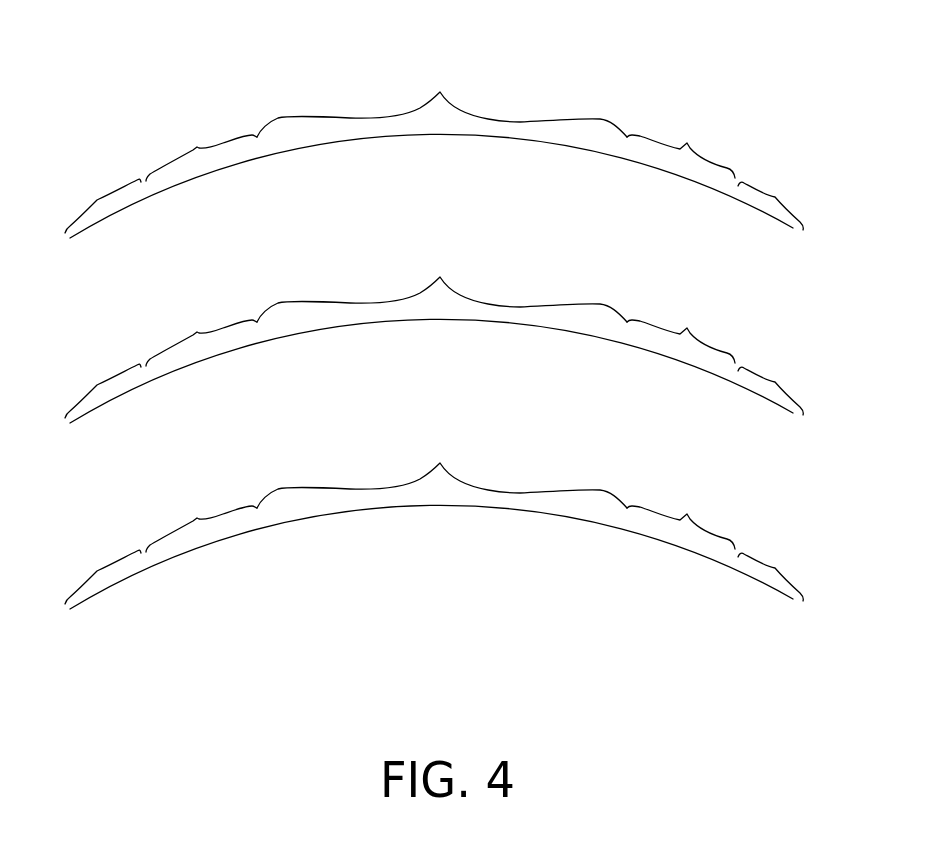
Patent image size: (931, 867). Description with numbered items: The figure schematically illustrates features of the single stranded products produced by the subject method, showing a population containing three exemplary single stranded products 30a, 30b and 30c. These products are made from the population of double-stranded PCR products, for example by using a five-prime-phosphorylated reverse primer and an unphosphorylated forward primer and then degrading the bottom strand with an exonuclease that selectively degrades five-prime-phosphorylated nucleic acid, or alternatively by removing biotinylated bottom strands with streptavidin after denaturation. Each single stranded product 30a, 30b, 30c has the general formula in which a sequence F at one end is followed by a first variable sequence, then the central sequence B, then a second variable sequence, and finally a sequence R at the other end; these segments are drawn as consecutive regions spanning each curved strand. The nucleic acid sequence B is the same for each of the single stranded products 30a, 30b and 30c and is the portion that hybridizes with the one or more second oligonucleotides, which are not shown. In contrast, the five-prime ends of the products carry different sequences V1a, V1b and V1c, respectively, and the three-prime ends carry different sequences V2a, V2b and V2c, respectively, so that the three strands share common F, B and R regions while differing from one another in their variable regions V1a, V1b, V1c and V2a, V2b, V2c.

The single stranded product 30a is at (183, 180).
The single stranded product 30b is at (431, 375).
The single stranded product 30c is at (431, 561).
The sequence F is at (97, 200).
The sequence V1a is at (197, 147).
The sequence V1b is at (201, 313).
The sequence V1c is at (201, 499).
The nucleic acid sequence B is at (440, 92).
The sequence V2a is at (687, 143).
The sequence V2b is at (681, 312).
The sequence V2c is at (681, 498).
The sequence R is at (775, 197).